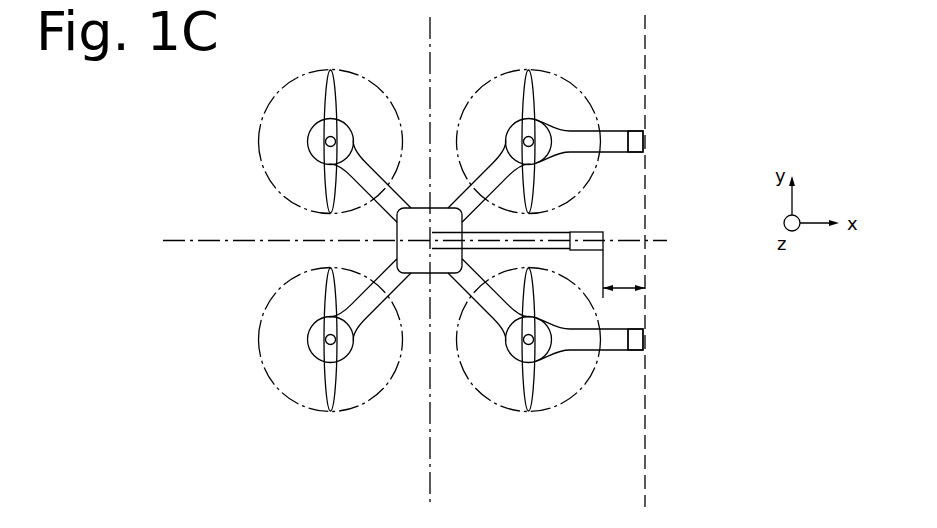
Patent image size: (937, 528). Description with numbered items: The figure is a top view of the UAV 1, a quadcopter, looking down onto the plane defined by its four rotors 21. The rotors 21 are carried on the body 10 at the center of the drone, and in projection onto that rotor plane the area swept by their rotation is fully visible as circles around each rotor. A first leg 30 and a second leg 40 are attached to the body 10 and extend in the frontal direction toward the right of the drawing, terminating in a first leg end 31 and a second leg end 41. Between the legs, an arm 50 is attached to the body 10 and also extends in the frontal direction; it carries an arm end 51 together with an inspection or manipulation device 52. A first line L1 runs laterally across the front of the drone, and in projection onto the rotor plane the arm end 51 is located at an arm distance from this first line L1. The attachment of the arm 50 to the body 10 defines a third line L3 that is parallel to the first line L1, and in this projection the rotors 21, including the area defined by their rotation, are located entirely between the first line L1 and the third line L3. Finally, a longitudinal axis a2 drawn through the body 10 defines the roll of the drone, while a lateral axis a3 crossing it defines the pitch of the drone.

The UAV 1 is at (266, 231).
The body 10 is at (397, 238).
The rotors 21 is at (334, 113).
The first leg 30 is at (612, 343).
The first leg end 31 is at (637, 338).
The second leg 40 is at (610, 143).
The second leg end 41 is at (638, 142).
The arm 50 is at (548, 238).
The arm end 51 is at (603, 238).
The inspection or manipulation device 52 is at (590, 249).
The longitudinal axis a2 is at (222, 240).
The lateral axis a3 is at (431, 31).
The first line L1 is at (645, 40).
The third line L3 is at (431, 466).